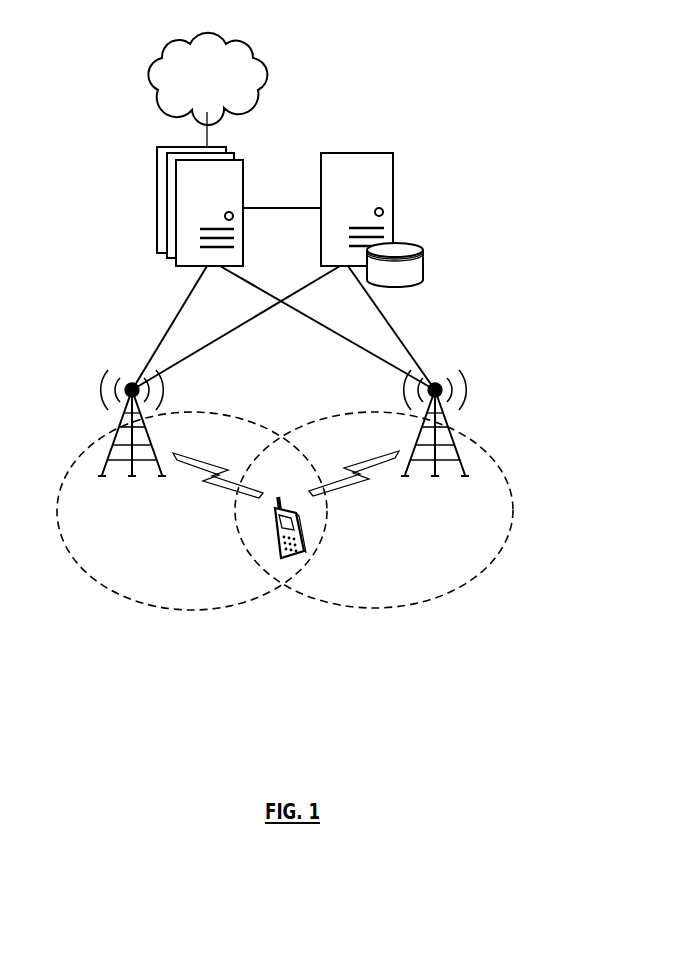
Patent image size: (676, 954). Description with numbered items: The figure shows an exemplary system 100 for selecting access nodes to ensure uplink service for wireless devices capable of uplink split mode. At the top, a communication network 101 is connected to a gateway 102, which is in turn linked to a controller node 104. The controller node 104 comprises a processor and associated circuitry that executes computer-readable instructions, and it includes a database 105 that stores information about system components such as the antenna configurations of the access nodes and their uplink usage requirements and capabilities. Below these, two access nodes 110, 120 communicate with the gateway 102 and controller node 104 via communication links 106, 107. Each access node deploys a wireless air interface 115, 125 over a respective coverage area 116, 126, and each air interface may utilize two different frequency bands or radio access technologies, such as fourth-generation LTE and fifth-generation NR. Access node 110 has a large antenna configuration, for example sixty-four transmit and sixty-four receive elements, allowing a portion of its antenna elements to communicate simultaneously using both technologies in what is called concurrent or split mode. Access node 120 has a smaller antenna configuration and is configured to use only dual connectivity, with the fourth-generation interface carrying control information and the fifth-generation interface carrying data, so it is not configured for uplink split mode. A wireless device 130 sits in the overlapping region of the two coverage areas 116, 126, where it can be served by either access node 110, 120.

The system 100 is at (339, 47).
The communication network 101 is at (223, 83).
The gateway 102 is at (157, 180).
The controller node 104 is at (393, 193).
The database 105 is at (423, 265).
The communication link 106 is at (263, 292).
The communication link 107 is at (234, 330).
The access node 110 is at (113, 453).
The wireless air interface 115 is at (222, 487).
The coverage area 116 is at (122, 595).
The access node 120 is at (455, 457).
The wireless air interface 125 is at (355, 487).
The coverage area 126 is at (448, 597).
The wireless device 130 is at (275, 545).